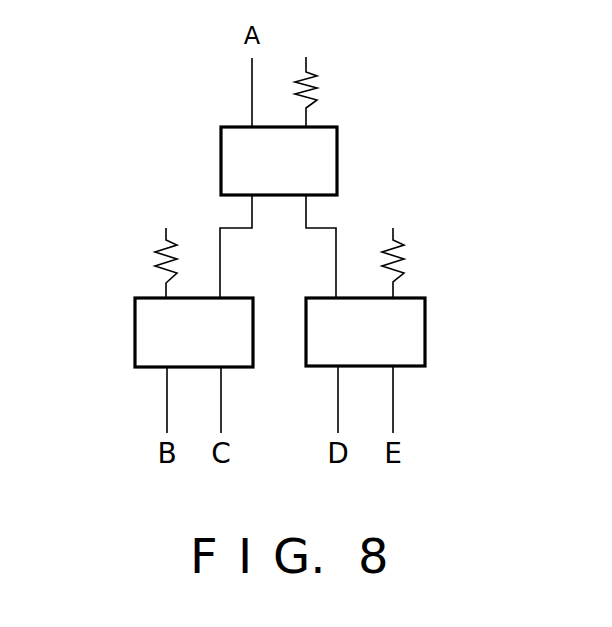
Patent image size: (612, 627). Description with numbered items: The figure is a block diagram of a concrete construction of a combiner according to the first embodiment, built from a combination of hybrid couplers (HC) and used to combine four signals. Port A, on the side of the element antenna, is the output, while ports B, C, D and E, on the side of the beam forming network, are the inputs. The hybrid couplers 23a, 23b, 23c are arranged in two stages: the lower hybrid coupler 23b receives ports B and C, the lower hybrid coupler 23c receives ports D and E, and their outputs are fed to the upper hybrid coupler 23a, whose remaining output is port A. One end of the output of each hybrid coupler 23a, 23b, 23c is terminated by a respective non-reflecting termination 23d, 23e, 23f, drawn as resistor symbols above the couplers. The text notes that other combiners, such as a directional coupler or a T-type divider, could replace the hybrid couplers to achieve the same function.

The hybrid coupler 23a is at (337, 163).
The hybrid coupler 23b is at (135, 325).
The hybrid coupler 23c is at (425, 326).
The non-reflecting termination 23d is at (320, 92).
The non-reflecting termination 23e is at (148, 256).
The non-reflecting termination 23f is at (408, 254).